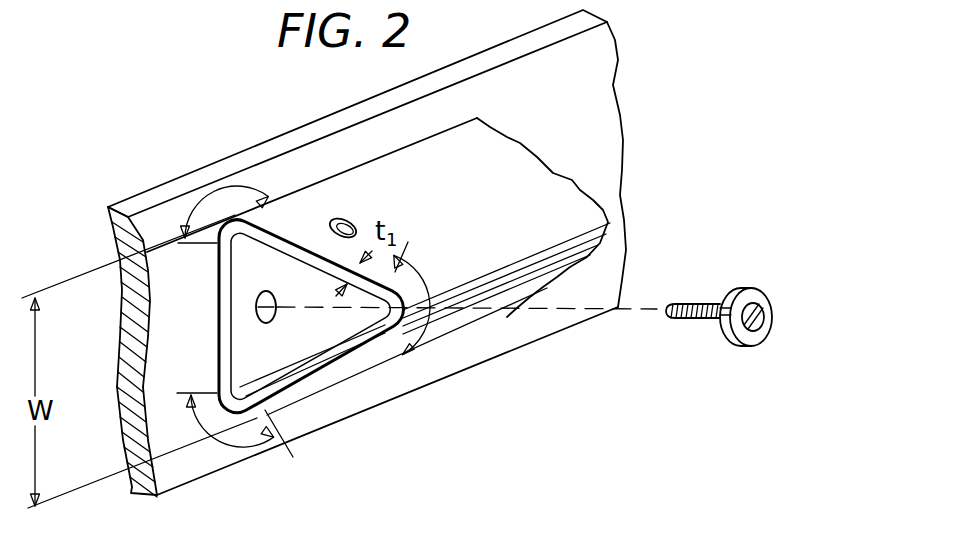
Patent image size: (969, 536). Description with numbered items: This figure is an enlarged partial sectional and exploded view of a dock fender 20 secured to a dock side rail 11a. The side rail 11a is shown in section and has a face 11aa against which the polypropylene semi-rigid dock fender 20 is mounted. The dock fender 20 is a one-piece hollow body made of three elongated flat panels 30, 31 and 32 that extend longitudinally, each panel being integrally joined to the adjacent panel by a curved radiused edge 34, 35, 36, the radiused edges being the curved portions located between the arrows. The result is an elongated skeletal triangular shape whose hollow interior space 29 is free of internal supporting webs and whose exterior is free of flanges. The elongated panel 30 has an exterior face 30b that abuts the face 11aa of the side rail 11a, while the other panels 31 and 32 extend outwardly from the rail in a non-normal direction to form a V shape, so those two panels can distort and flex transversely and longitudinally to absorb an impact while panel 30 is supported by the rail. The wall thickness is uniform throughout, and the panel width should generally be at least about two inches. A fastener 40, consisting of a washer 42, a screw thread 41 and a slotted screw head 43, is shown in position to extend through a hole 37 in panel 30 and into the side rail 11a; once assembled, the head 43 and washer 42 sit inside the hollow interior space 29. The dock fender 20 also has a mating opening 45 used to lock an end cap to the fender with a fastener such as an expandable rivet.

The side rail 11a is at (233, 163).
The face of side rail 11aa is at (163, 222).
The dock fender 20 is at (364, 253).
The hollow interior space 29 is at (311, 246).
The elongated flat panel 30 is at (222, 306).
The exterior face of elongated panel 30b is at (219, 355).
The elongated flat panel 31 is at (337, 363).
The elongated flat panel 32 is at (310, 245).
The radiused edge 34 is at (400, 312).
The radiused edge 35 is at (230, 220).
The radiused edge 36 is at (241, 408).
The hole 37 is at (262, 300).
The fastener 40 is at (742, 281).
The screw thread 41 is at (687, 307).
The washer 42 is at (747, 288).
The slotted screw head 43 is at (760, 312).
The mating opening 45 is at (353, 220).